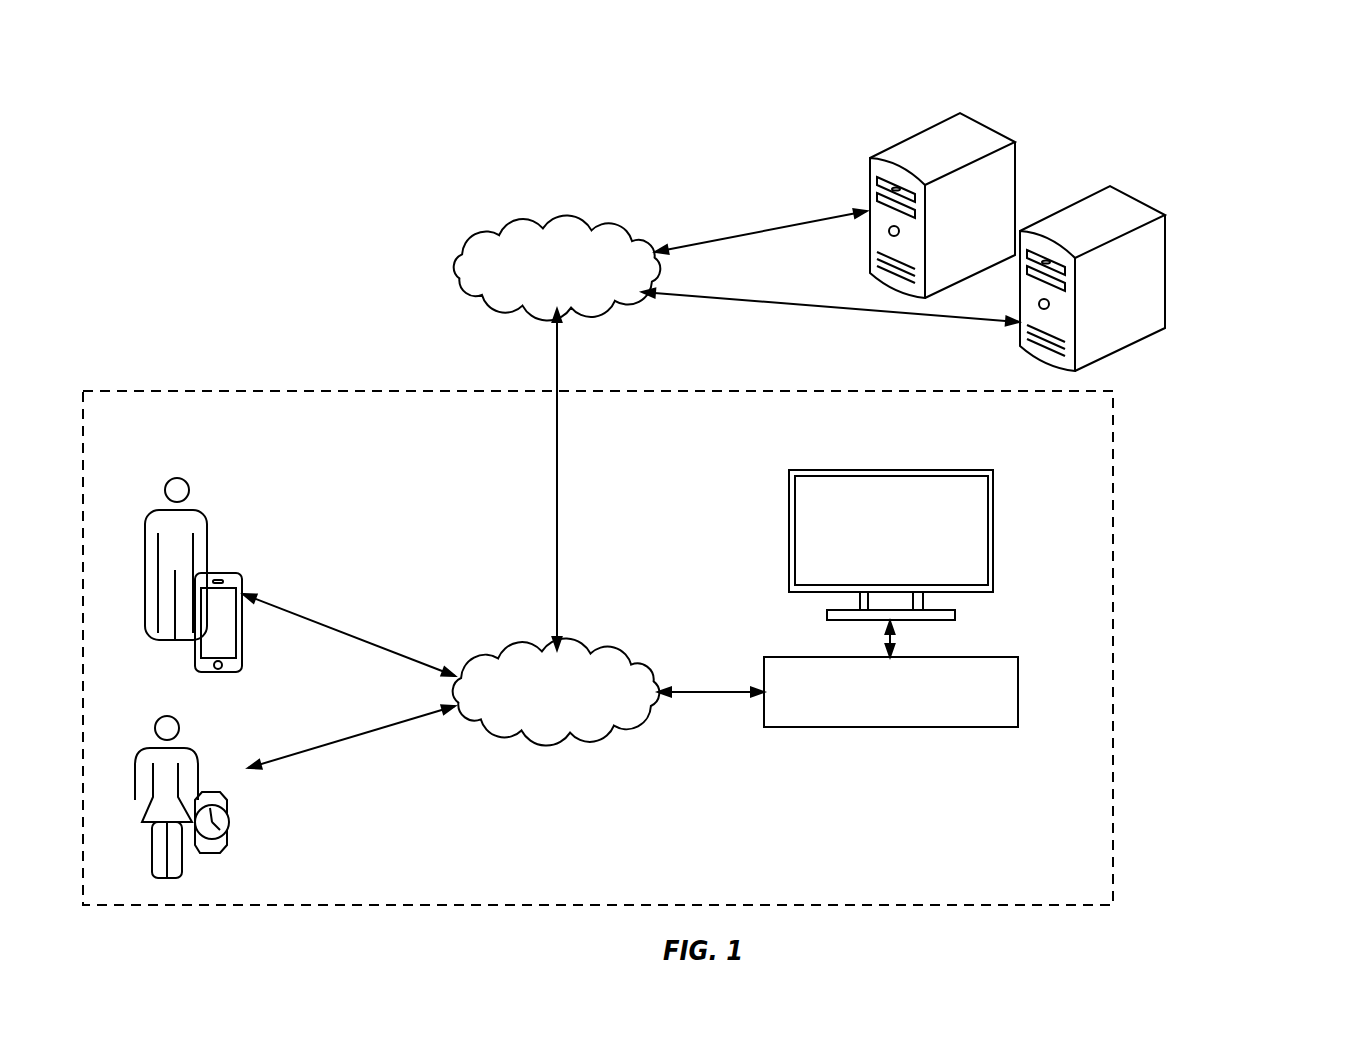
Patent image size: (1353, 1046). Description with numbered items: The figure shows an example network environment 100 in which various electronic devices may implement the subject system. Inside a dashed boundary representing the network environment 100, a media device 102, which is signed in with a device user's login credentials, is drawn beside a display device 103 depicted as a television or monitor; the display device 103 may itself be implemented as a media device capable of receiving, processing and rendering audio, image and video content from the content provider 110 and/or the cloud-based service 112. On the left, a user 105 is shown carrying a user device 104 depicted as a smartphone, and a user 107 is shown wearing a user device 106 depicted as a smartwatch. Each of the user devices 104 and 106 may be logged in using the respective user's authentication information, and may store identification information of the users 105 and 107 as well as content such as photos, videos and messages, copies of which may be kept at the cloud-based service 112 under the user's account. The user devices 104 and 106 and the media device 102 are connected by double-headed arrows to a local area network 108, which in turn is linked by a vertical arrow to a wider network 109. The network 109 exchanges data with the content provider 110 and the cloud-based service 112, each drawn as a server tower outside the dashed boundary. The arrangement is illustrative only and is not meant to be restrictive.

The network environment 100 is at (103, 390).
The media device 102 is at (1018, 692).
The display device 103 is at (888, 470).
The user device 104 is at (220, 573).
The user 105 is at (175, 478).
The user device 106 is at (211, 790).
The user 107 is at (166, 712).
The local area network 108 is at (597, 650).
The network 109 is at (556, 228).
The content provider 110 is at (910, 138).
The cloud-based service 112 is at (1165, 272).